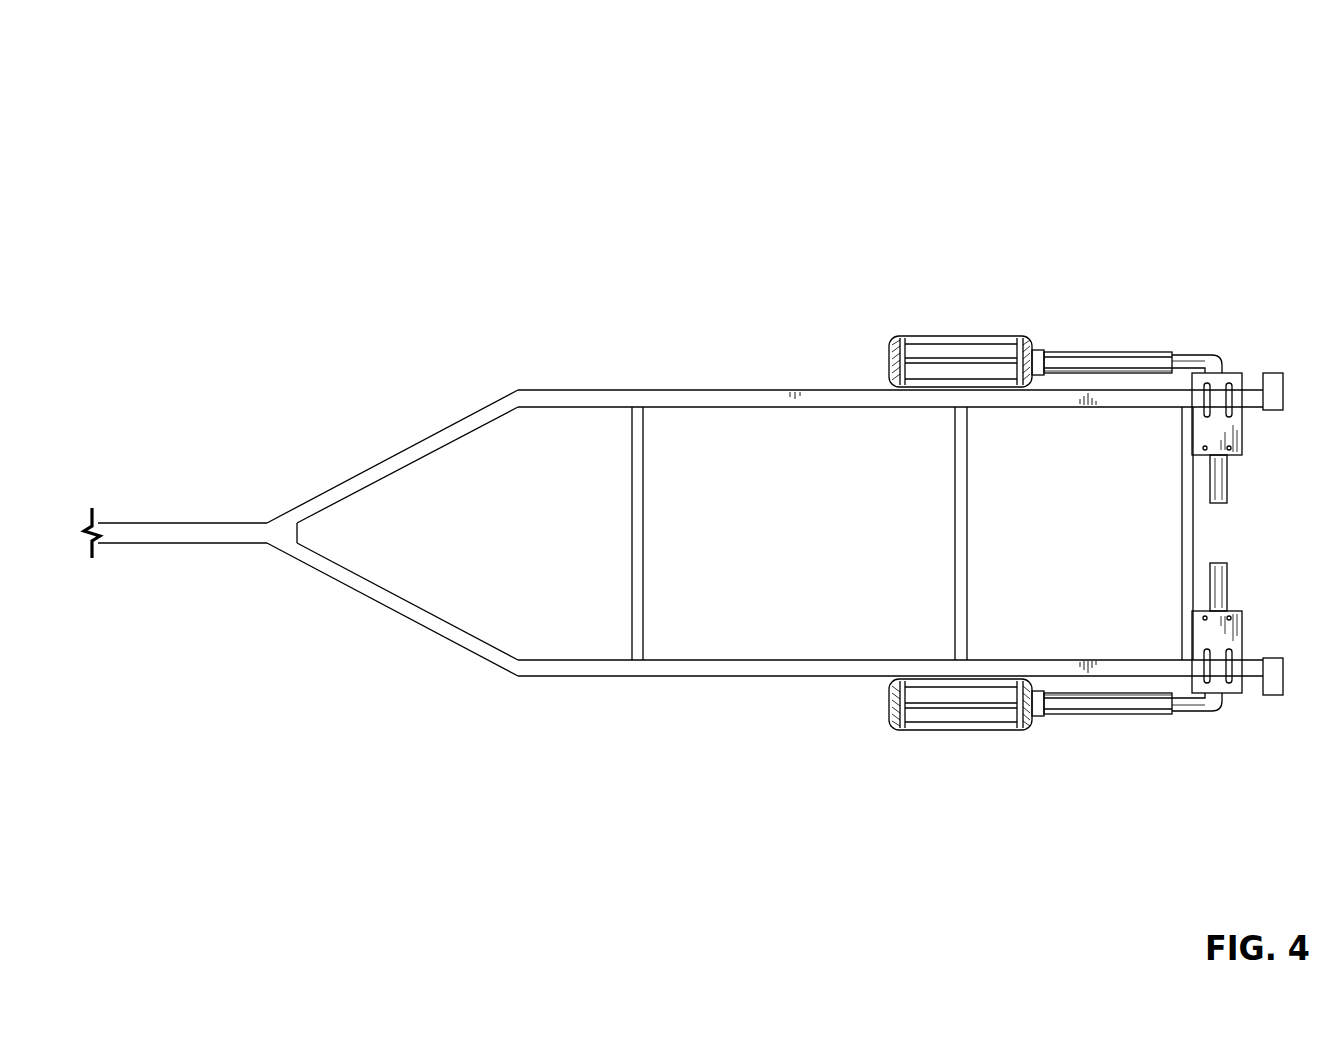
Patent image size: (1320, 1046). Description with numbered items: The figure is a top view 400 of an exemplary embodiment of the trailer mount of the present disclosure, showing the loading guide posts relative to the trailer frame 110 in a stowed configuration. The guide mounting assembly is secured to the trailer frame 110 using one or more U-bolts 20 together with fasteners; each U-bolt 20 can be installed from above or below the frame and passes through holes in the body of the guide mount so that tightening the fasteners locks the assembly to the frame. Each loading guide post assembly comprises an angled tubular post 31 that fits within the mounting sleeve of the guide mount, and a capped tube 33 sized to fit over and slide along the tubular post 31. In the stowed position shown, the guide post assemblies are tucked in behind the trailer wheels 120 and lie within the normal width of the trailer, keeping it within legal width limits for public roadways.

The top view 400 is at (1175, 122).
The trailer frame 110 is at (795, 390).
The wheel 120 is at (932, 336).
The capped tube 33 is at (1062, 352).
The angled tubular post 31 is at (1205, 352).
The U-bolt 20 is at (1237, 455).